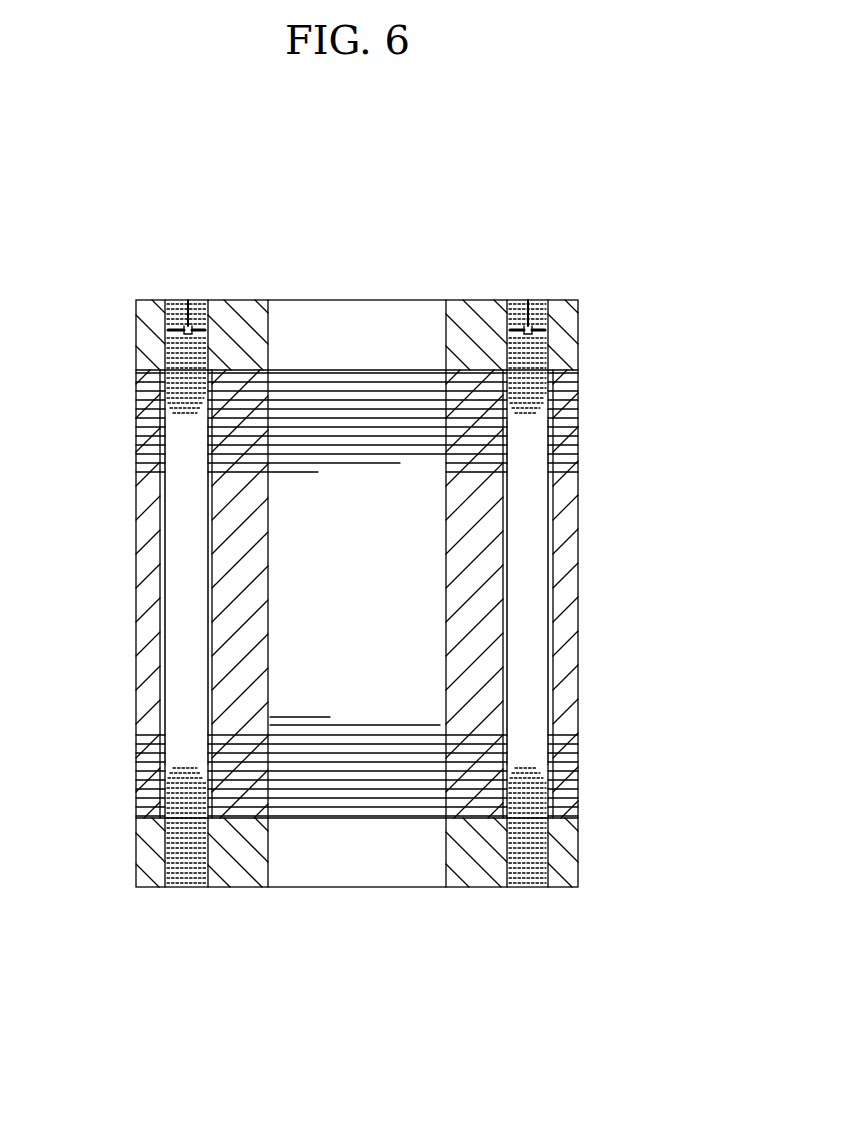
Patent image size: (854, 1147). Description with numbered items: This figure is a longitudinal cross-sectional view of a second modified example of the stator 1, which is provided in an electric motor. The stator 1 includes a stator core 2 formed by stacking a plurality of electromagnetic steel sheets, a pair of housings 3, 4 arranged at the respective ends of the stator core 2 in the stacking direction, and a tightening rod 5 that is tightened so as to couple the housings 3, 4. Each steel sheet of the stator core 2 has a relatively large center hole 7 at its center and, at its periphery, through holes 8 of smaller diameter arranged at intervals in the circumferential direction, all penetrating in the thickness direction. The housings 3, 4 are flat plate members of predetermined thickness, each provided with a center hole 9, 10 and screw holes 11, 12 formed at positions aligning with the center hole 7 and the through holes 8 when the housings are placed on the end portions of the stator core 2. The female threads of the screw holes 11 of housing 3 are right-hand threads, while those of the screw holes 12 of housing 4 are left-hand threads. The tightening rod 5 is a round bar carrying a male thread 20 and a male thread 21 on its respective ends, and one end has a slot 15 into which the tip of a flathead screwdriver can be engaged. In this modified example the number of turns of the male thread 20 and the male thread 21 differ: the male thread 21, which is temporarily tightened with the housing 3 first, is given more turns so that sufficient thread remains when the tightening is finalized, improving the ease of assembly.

The stator 1 is at (670, 191).
The stator core 2 is at (136, 587).
The housing 3 is at (136, 826).
The housing 4 is at (136, 321).
The tightening rod 5 is at (160, 521).
The center hole 7 is at (446, 608).
The through hole 8 is at (168, 628).
The center hole 9 is at (270, 858).
The center hole 10 is at (268, 330).
The screw hole 11 is at (185, 878).
The screw hole 12 is at (190, 325).
The slot 15 is at (188, 338).
The male thread 20 is at (165, 356).
The male thread 21 is at (165, 838).